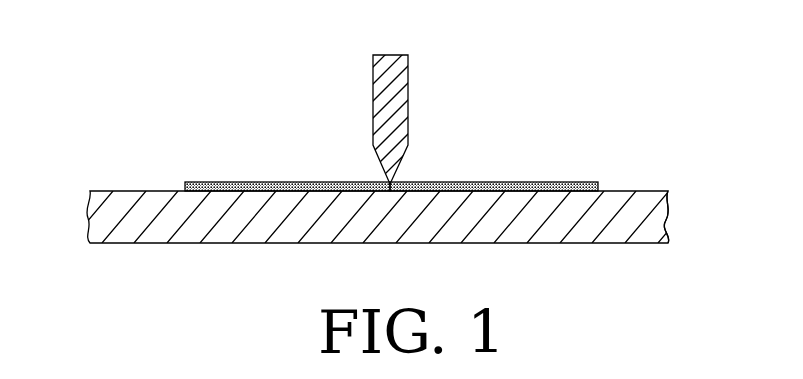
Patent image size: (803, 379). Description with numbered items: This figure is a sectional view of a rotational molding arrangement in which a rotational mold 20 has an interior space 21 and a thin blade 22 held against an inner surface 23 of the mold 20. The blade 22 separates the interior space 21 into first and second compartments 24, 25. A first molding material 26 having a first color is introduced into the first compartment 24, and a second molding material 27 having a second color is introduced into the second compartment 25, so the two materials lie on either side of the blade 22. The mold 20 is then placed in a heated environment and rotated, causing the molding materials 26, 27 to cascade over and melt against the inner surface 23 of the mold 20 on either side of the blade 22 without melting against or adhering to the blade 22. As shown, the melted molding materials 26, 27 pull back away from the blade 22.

The rotational mold 20 is at (170, 236).
The interior space 21 is at (192, 37).
The thin blade 22 is at (393, 79).
The inner surface 23 is at (650, 190).
The first compartment 24 is at (315, 131).
The second compartment 25 is at (503, 131).
The first molding material 26 is at (208, 188).
The second molding material 27 is at (555, 182).